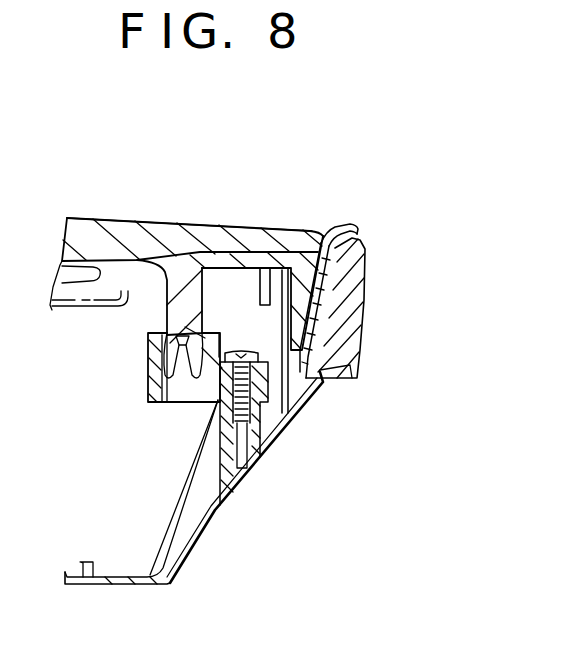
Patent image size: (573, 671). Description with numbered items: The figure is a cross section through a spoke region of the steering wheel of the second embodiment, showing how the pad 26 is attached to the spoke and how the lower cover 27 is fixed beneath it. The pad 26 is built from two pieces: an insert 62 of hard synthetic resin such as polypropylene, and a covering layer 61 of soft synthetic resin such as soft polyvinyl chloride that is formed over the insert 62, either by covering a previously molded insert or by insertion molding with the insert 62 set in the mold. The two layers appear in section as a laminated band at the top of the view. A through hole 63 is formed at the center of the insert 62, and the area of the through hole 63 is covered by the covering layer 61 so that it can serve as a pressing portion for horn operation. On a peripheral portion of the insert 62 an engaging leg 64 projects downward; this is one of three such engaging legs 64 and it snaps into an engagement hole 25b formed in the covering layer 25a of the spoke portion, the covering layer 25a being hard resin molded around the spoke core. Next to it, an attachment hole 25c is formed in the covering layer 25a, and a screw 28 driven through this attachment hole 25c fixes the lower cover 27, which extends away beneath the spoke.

The pad 26 is at (260, 152).
The covering layer 61 is at (84, 222).
The insert 62 is at (233, 262).
The through hole 63 is at (141, 258).
The engaging legs 64 is at (173, 318).
The covering layer of the spoke portion 25a is at (360, 232).
The engagement hole 25b is at (180, 388).
The attachment hole 25c is at (247, 352).
The lower cover 27 is at (200, 548).
The screw 28 is at (246, 466).